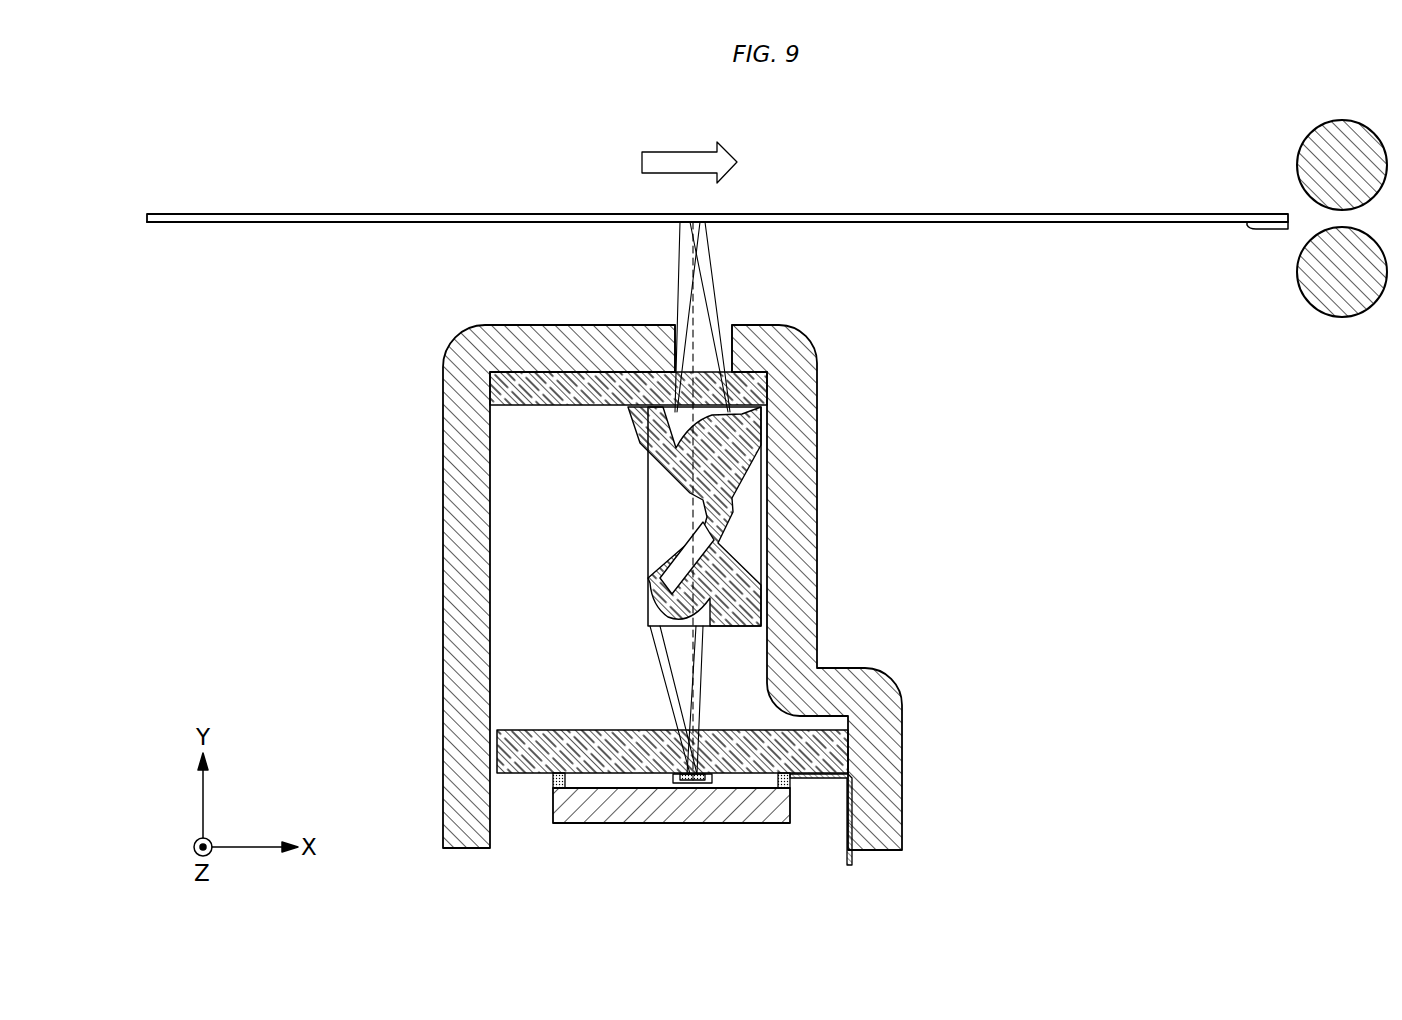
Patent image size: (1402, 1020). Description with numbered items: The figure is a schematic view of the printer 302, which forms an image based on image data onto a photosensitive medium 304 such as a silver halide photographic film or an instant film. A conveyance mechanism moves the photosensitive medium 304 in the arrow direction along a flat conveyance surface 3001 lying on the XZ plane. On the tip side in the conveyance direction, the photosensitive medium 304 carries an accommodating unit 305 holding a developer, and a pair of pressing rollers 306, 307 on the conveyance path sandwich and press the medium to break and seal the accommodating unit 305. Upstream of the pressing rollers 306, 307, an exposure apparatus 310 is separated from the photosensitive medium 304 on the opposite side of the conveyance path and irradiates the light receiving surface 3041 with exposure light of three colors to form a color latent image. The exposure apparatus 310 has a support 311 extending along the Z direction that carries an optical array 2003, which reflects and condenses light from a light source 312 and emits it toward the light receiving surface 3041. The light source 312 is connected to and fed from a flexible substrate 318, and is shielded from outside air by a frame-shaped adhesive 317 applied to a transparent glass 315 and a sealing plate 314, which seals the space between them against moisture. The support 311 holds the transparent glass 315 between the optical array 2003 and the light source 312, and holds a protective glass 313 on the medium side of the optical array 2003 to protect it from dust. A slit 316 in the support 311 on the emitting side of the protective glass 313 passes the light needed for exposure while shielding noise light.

The printer 302 is at (912, 147).
The photosensitive medium 304 is at (246, 213).
The light receiving surface 3041 is at (184, 223).
The conveyance surface 3001 is at (347, 223).
The accommodating unit 305 is at (1270, 229).
The pressing roller 306 is at (1297, 159).
The pressing roller 307 is at (1340, 317).
The exposure apparatus 310 is at (710, 574).
The support 311 is at (802, 543).
The slit 316 is at (725, 336).
The protective glass 313 is at (553, 401).
The optical array 2003 is at (752, 452).
The transparent glass 315 is at (556, 733).
The sealing plate 314 is at (564, 810).
The adhesive 317 is at (793, 782).
The light source 312 is at (690, 790).
The flexible substrate 318 is at (850, 866).